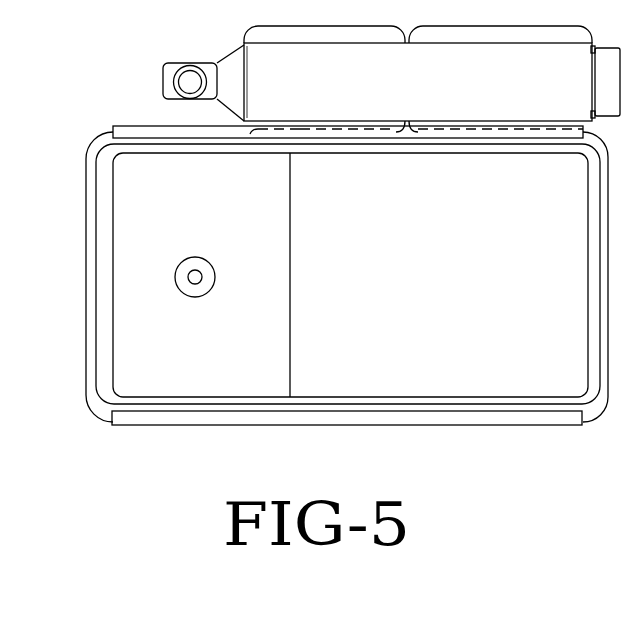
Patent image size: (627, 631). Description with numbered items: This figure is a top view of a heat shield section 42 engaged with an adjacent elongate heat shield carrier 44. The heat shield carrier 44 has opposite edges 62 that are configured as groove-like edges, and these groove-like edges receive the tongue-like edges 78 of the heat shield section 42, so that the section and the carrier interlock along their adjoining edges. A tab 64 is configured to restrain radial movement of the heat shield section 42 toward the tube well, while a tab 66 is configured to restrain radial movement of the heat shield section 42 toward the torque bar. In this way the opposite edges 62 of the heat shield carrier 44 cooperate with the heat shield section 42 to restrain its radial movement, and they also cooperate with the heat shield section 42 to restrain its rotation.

The heat shield section 42 is at (402, 284).
The elongate heat shield carrier 44 is at (405, 92).
The opposite edges 62 is at (321, 133).
The tab 64 is at (487, 131).
The tab 66 is at (278, 132).
The tongue-like edges 78 is at (155, 132).